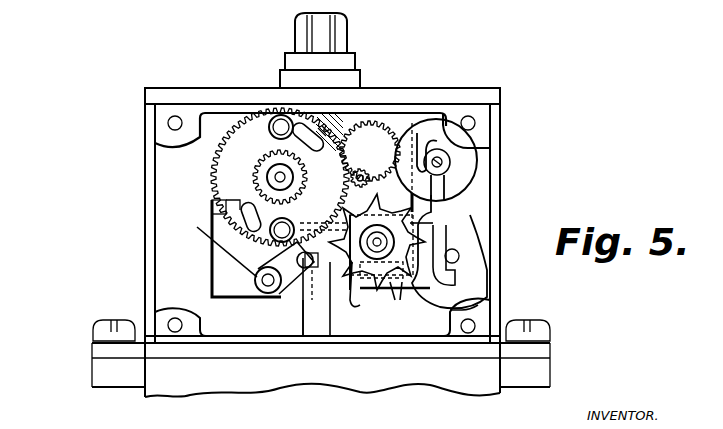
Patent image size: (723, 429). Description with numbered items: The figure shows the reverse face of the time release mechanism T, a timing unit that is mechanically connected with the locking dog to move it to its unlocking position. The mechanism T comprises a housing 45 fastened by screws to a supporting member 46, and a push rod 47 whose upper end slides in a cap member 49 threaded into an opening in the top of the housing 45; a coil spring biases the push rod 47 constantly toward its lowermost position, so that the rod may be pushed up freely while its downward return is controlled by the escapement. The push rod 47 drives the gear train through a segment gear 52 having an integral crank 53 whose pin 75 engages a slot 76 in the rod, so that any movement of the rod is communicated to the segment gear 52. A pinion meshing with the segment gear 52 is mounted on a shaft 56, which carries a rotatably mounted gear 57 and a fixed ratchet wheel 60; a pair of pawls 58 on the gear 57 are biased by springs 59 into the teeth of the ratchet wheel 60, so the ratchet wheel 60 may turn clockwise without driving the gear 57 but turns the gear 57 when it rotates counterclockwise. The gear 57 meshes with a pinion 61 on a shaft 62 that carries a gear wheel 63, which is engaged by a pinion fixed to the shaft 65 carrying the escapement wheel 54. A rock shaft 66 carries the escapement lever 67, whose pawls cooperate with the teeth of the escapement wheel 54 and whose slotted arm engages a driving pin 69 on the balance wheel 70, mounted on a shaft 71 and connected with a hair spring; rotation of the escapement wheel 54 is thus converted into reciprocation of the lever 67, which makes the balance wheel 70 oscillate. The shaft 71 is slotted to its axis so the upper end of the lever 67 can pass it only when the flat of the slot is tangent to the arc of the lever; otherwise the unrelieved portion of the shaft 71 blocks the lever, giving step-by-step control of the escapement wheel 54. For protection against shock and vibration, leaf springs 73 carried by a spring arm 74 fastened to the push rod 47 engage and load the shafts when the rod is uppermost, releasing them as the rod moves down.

The time release mechanism T is at (140, 134).
The housing 45 is at (440, 89).
The supporting member 46 is at (147, 397).
The push rod 47 is at (303, 328).
The cap member 49 is at (347, 19).
The segment gear 52 is at (208, 224).
The crank 53 is at (316, 297).
The escapement wheel 54 is at (357, 296).
The shaft 56 is at (276, 178).
The gear 57 is at (214, 158).
The pawls 58 is at (306, 148).
The springs 59 is at (271, 129).
The ratchet wheel 60 is at (268, 160).
The pinion 61 is at (370, 151).
The shaft 62 is at (369, 166).
The gear wheel 63 is at (373, 125).
The shaft 65 is at (379, 241).
The rock shaft 66 is at (459, 253).
The escapement lever 67 is at (487, 308).
The driving pin 69 is at (422, 169).
The balance wheel 70 is at (480, 160).
The shaft 71 is at (442, 162).
The leaf springs 73 is at (231, 300).
The spring arm 74 is at (218, 197).
The pin 75 is at (284, 268).
The slot 76 is at (311, 268).